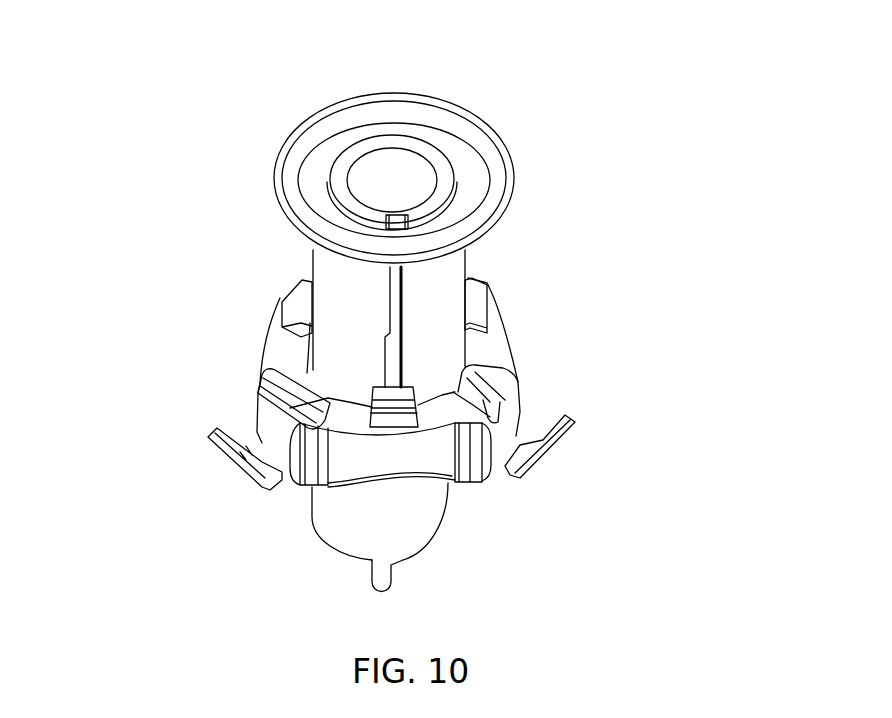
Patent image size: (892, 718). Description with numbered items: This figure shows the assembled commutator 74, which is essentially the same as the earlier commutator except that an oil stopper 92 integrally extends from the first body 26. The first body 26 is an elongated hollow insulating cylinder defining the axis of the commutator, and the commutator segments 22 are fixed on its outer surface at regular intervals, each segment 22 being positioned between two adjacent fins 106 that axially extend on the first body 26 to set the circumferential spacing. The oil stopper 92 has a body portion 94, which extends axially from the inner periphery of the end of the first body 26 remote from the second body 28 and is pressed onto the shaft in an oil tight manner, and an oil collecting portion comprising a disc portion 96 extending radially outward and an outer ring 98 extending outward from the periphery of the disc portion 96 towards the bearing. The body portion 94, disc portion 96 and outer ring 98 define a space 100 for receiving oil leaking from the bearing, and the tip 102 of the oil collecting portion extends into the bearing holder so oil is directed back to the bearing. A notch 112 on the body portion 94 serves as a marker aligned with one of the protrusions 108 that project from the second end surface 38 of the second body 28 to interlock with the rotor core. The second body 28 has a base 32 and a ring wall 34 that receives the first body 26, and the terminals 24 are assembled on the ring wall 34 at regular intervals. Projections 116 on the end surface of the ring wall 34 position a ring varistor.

The commutator 74 is at (190, 109).
The oil stopper 92 is at (290, 125).
The outer ring 98 is at (367, 112).
The space 100 is at (438, 138).
The body portion 94 is at (447, 173).
The tip 102 is at (507, 167).
The disc portion 96 is at (470, 205).
The notch 112 is at (398, 228).
The fins 106 is at (390, 297).
The commutator segments 22 is at (443, 285).
The first body 26 is at (392, 348).
The projections 116 is at (297, 303).
The ring wall 34 is at (497, 357).
The terminals 24 is at (210, 433).
The second body 28 is at (403, 457).
The base 32 is at (357, 515).
The protrusions 108 is at (383, 573).
The second end surface 38 is at (427, 553).